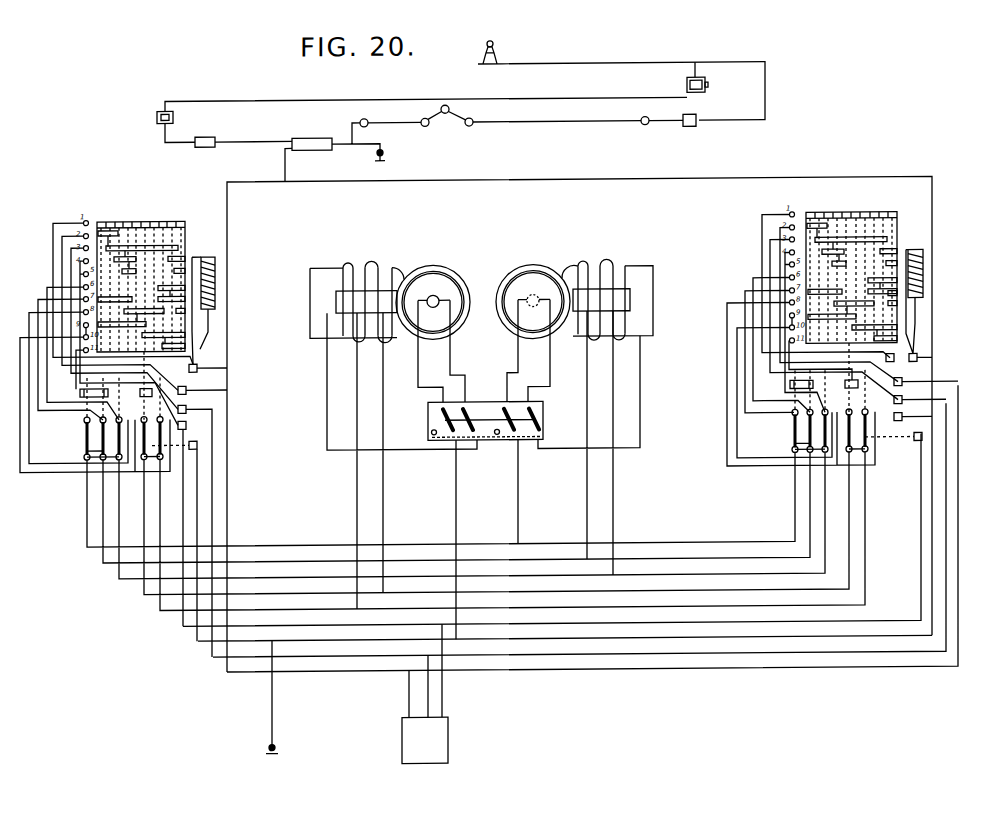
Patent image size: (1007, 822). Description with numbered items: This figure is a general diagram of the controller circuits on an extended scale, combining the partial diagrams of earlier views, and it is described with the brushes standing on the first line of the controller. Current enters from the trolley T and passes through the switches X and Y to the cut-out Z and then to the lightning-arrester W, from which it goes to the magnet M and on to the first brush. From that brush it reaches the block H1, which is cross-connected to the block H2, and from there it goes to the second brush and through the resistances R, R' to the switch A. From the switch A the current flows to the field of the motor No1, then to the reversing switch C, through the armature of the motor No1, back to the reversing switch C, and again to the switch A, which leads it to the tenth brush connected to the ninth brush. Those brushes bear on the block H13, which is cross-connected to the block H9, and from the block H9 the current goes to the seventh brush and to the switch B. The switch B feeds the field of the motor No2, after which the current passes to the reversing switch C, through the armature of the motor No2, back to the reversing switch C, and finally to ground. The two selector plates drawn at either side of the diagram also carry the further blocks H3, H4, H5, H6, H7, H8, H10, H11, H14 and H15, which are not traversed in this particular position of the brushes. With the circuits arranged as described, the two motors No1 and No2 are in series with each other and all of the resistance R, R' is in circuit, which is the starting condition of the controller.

The trolley T is at (484, 49).
The switch X is at (690, 84).
The switch Y is at (155, 118).
The cut-out Z is at (205, 134).
The lightning-arrester W is at (305, 140).
The block H1 is at (148, 280).
The block H2 is at (796, 228).
The block H3 is at (142, 242).
The block H4 is at (114, 239).
The block H5 is at (176, 257).
The block H6 is at (120, 271).
The block H7 is at (170, 271).
The block H8 is at (160, 289).
The block H9 is at (115, 293).
The block H10 is at (161, 294).
The block H11 is at (134, 258).
The block H13 is at (131, 317).
The block H14 is at (149, 333).
The block H15 is at (149, 343).
The magnet M is at (203, 302).
The switch A is at (92, 438).
The switch B is at (144, 462).
The reversing switch C is at (485, 411).
The resistance R is at (409, 740).
The resistance R' is at (459, 735).
The motor No1 is at (574, 289).
The motor No2 is at (390, 290).